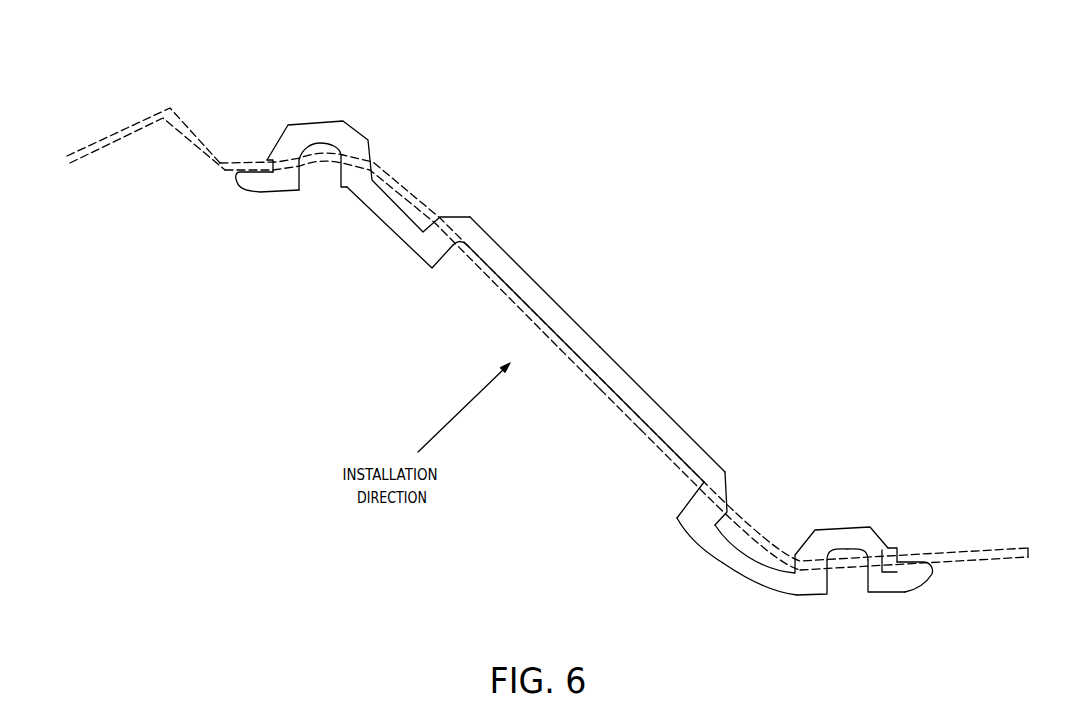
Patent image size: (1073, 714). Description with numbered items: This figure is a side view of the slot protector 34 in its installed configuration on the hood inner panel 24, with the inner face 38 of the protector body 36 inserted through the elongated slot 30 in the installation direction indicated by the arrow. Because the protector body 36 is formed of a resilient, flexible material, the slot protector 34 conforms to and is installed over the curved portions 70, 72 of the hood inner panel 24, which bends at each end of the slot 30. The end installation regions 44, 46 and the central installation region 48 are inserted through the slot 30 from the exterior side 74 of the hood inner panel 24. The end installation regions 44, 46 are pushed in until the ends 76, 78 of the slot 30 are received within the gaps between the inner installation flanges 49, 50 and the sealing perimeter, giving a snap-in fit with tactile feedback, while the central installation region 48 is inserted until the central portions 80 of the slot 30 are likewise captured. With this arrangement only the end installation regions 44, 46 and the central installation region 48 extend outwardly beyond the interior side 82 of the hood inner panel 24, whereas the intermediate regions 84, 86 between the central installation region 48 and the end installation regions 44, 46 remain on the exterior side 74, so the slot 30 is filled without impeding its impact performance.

The hood inner panel 24 is at (146, 98).
The elongated slot 30 is at (624, 359).
The slot protector 34 is at (585, 343).
The protector body 36 is at (729, 479).
The inner face 38 is at (665, 395).
The end installation region 44 is at (368, 130).
The end installation region 46 is at (791, 509).
The central installation region 48 is at (558, 401).
The inner installation flange 49 is at (250, 141).
The inner installation flange 50 is at (913, 544).
The curved portion 70 is at (679, 572).
The curved portion 72 is at (308, 210).
The exterior side 74 is at (704, 499).
The end of slot 76 is at (311, 141).
The end of slot 78 is at (866, 528).
The central portion of slot 80 is at (608, 416).
The interior side 82 is at (457, 270).
The intermediate region 84 is at (383, 244).
The intermediate region 86 is at (738, 614).